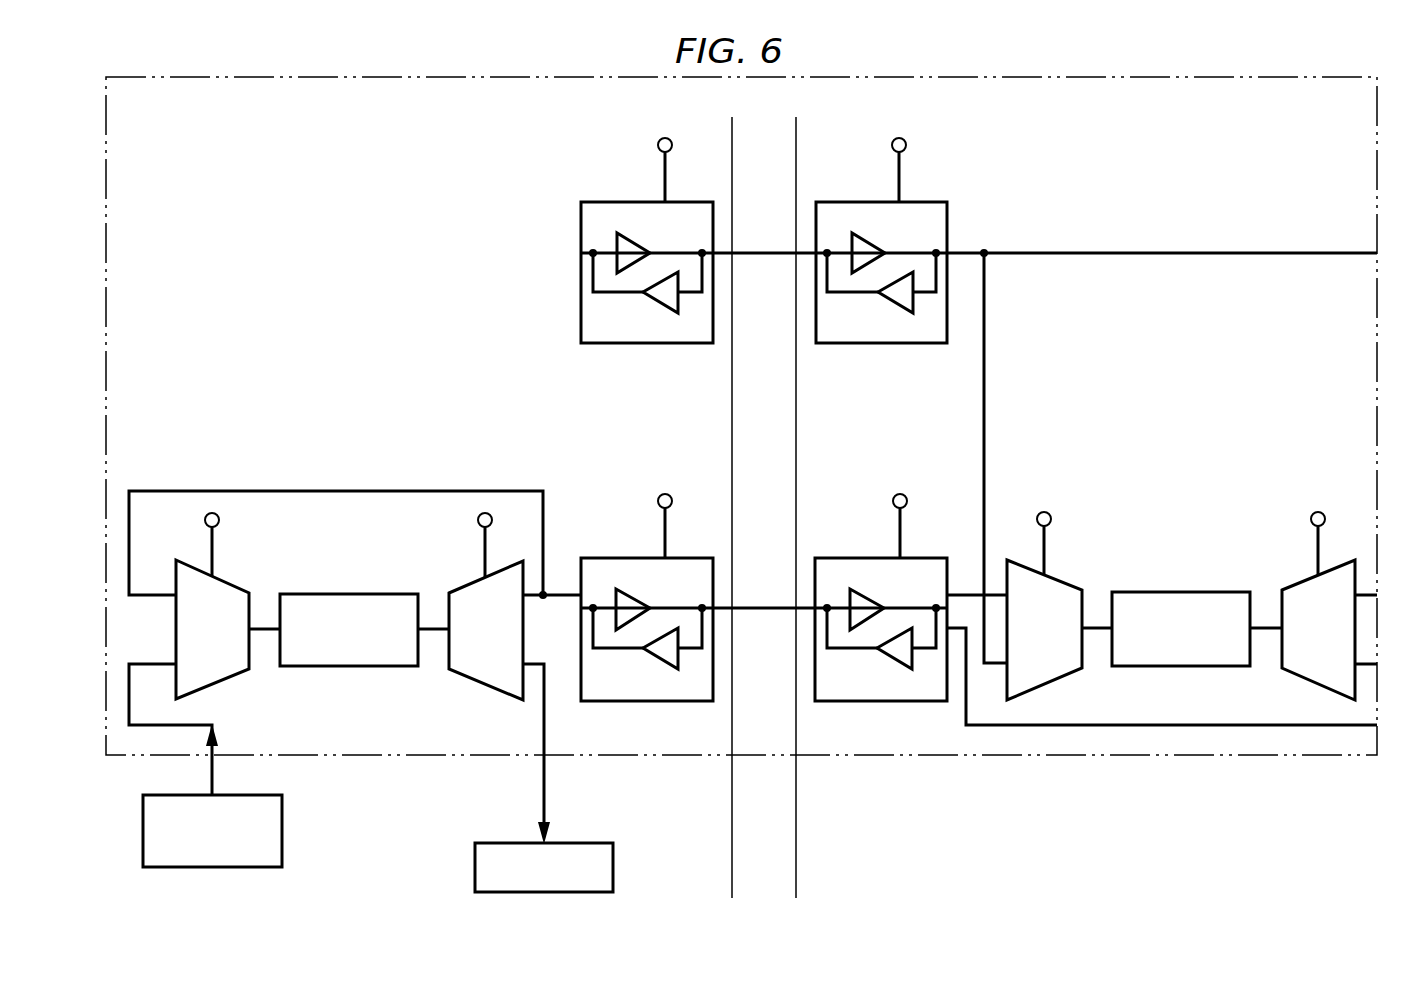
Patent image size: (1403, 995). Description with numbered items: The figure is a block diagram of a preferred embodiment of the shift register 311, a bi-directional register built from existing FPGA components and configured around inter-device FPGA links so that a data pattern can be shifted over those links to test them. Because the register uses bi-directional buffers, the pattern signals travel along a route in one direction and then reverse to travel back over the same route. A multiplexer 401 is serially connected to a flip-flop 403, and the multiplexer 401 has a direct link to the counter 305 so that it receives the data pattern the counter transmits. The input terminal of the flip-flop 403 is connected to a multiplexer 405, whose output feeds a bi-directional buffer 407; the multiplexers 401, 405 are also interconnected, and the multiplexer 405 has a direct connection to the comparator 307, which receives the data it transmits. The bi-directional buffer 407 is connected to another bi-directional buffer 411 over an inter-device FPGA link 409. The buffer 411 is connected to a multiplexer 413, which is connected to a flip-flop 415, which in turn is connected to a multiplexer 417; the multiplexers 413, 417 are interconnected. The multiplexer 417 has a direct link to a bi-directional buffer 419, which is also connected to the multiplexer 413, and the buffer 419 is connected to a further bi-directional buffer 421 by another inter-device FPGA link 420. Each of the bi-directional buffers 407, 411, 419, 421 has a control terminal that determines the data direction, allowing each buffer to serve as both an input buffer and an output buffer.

The counter 305 is at (282, 856).
The comparator 307 is at (613, 867).
The shift register 311 is at (106, 249).
The multiplexer 401 is at (230, 580).
The flip-flop 403 is at (388, 594).
The multiplexer 405 is at (472, 578).
The bi-directional buffer 407 is at (616, 558).
The inter-device FPGA link 409 is at (777, 608).
The bi-directional buffer 411 is at (850, 558).
The multiplexer 413 is at (1061, 578).
The flip-flop 415 is at (1140, 592).
The multiplexer 417 is at (1300, 578).
The bi-directional buffer 419 is at (851, 202).
The inter-device FPGA link 420 is at (777, 253).
The bi-directional buffer 421 is at (617, 202).